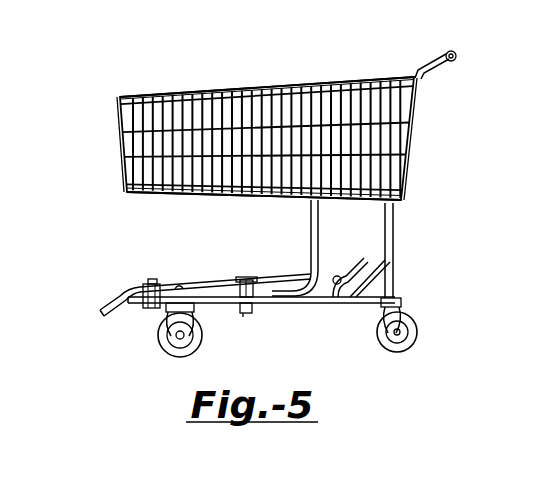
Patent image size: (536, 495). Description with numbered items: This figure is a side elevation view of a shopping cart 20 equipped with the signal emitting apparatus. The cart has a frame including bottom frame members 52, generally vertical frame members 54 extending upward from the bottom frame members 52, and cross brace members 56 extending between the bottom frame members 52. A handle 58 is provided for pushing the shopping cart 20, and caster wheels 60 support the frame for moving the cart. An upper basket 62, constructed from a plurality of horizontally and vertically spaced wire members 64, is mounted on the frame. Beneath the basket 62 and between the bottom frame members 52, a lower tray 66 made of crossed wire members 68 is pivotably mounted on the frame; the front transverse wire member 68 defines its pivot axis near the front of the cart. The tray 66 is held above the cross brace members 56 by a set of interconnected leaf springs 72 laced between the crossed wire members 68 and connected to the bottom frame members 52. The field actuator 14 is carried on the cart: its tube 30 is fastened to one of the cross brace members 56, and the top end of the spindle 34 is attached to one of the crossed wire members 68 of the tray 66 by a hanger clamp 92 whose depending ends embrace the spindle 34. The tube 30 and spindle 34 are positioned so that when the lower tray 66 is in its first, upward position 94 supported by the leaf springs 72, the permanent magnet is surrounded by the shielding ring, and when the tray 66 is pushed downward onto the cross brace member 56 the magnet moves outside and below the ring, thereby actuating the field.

The shopping cart 20 is at (245, 108).
The upper basket 62 is at (116, 107).
The wire members 64 is at (250, 92).
The handle 58 is at (424, 63).
The vertical frame members 54 is at (312, 250).
The lower tray 66 is at (270, 268).
The cross brace members 56 is at (105, 307).
The bottom frame members 52 is at (372, 303).
The leaf springs 72 is at (150, 281).
The crossed wire members 68 is at (190, 287).
The first, upward position 94 is at (366, 252).
The hanger clamp 92 is at (228, 286).
The spindle 34 is at (238, 287).
The field actuator 14 is at (258, 309).
The tube 30 is at (243, 313).
The caster wheels 60 is at (160, 342).